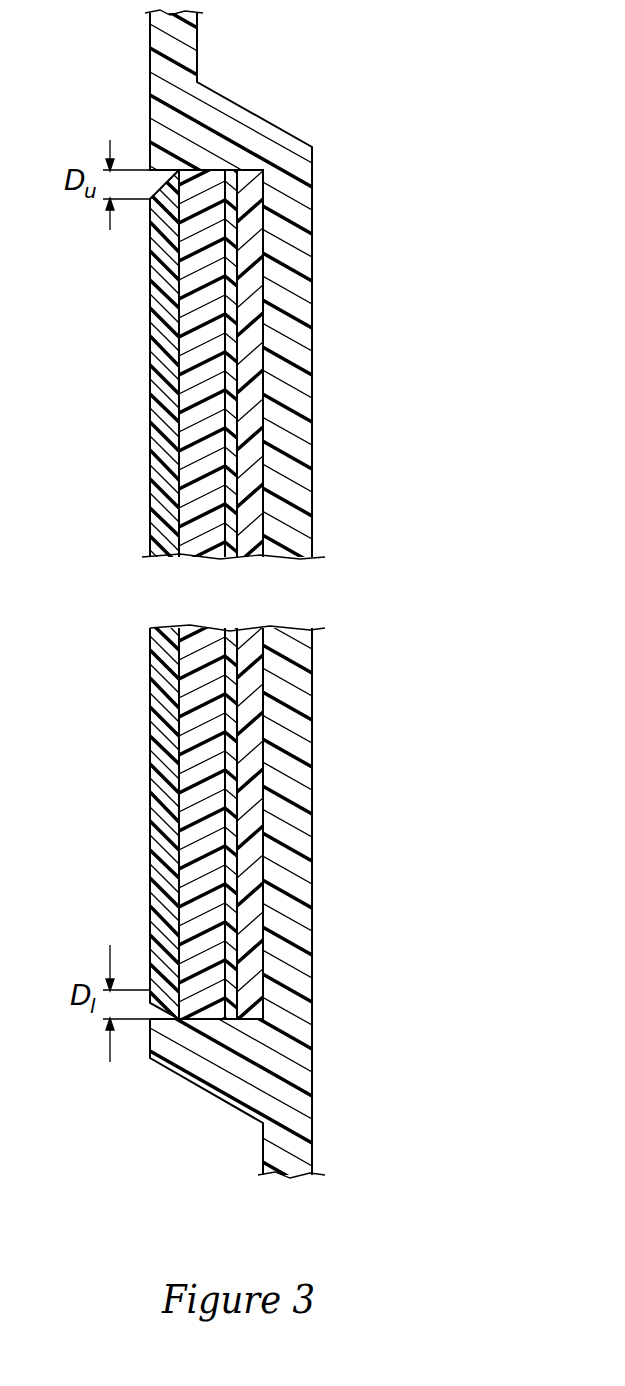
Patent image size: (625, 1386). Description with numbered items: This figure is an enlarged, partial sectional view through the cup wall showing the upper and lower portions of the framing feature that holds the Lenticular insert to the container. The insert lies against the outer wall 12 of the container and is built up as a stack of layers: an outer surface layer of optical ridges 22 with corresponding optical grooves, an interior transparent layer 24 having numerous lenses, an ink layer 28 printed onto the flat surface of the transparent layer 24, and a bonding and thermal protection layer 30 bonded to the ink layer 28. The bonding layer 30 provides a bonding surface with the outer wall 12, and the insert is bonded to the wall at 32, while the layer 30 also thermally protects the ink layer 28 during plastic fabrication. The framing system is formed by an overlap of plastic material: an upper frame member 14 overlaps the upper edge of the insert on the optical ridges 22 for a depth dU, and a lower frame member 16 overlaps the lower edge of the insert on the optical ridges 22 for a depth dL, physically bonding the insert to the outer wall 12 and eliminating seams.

The outer wall 12 is at (312, 1080).
The upper frame member 14 is at (153, 183).
The lower frame member 16 is at (170, 1020).
The optical ridges 22 is at (160, 455).
The transparent layer 24 is at (200, 628).
The ink layer 28 is at (265, 495).
The bonding and thermal protection layer 30 is at (257, 640).
The bond between substrate and outer wall 32 is at (265, 405).